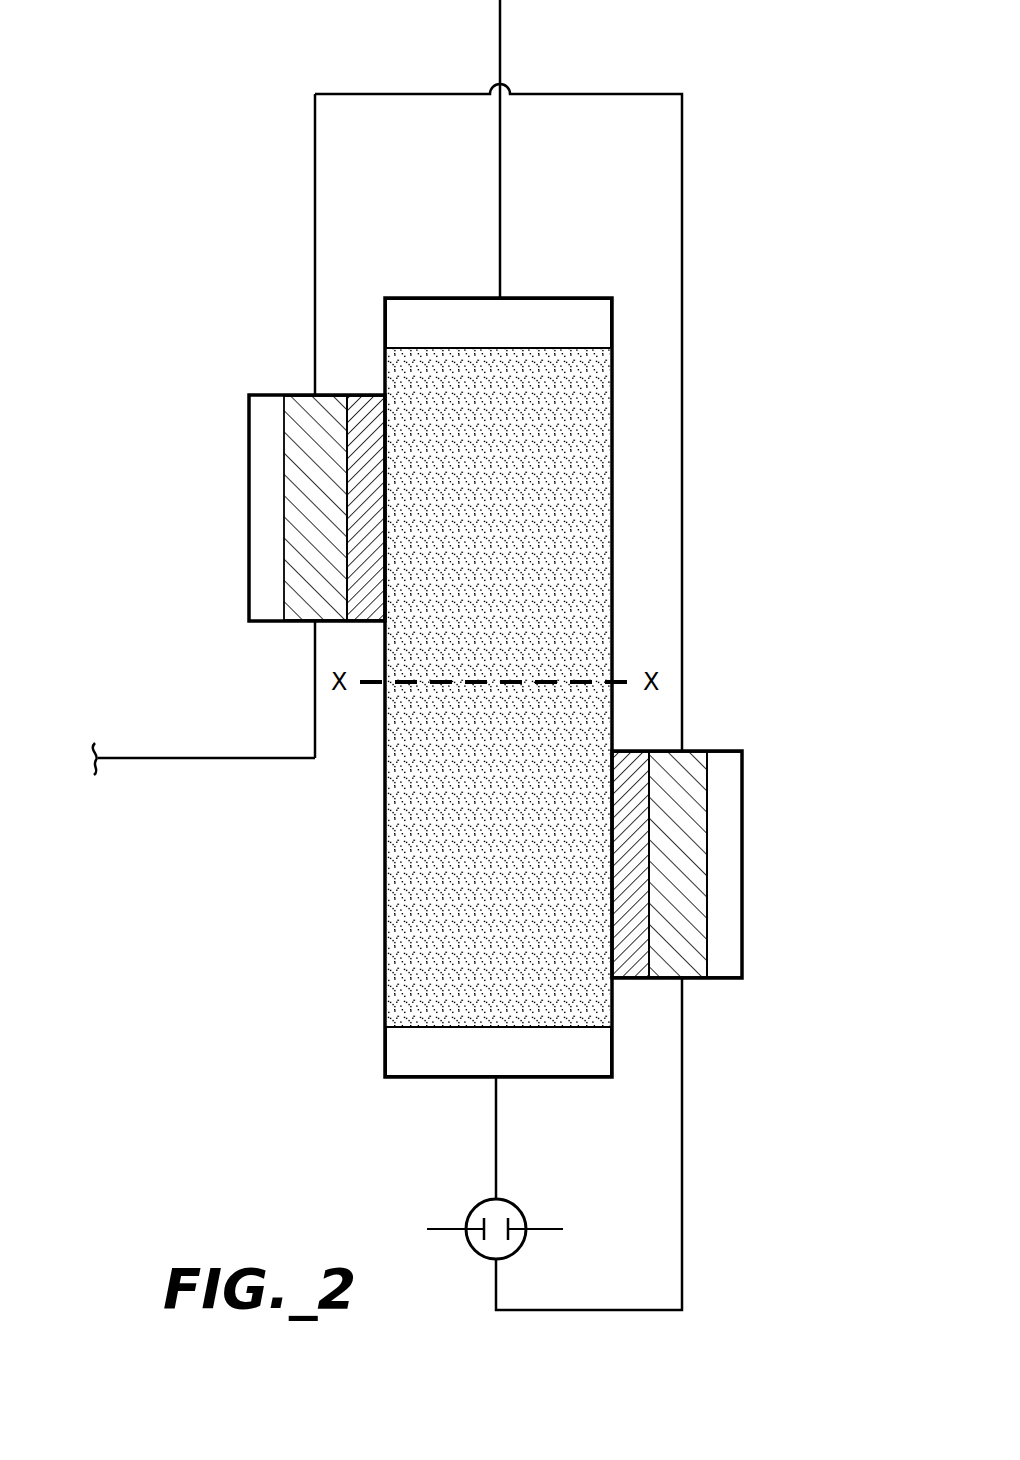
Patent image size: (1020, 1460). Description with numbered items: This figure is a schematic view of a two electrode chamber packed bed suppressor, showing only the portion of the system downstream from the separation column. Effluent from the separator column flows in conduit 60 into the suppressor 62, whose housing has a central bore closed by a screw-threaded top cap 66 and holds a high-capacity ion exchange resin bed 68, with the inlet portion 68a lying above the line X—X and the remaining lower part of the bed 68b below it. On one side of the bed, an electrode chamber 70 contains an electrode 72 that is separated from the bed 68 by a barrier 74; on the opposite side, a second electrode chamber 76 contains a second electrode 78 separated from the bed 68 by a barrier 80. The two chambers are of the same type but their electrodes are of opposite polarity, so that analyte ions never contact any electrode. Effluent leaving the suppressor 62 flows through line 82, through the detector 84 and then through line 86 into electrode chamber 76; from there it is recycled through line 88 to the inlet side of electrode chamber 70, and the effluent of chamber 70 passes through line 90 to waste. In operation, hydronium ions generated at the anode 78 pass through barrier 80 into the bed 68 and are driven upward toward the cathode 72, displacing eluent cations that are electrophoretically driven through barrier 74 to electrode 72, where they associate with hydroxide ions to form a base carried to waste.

The conduit 60 is at (502, 53).
The suppressor 62 is at (330, 862).
The top cap 66 is at (570, 297).
The ion exchange resin bed 68 is at (573, 578).
The inlet portion of bed 68a is at (597, 482).
The lower body portion 68b is at (415, 972).
The electrode chamber 70 is at (597, 328).
The electrode 72 is at (300, 487).
The barrier 74 is at (378, 392).
The electrode chamber 76 is at (742, 912).
The second electrode 78 is at (690, 858).
The barrier 80 is at (632, 978).
The line 82 is at (497, 1118).
The detector 84 is at (520, 1210).
The line 86 is at (682, 1140).
The line 88 is at (682, 720).
The line 90 is at (240, 757).